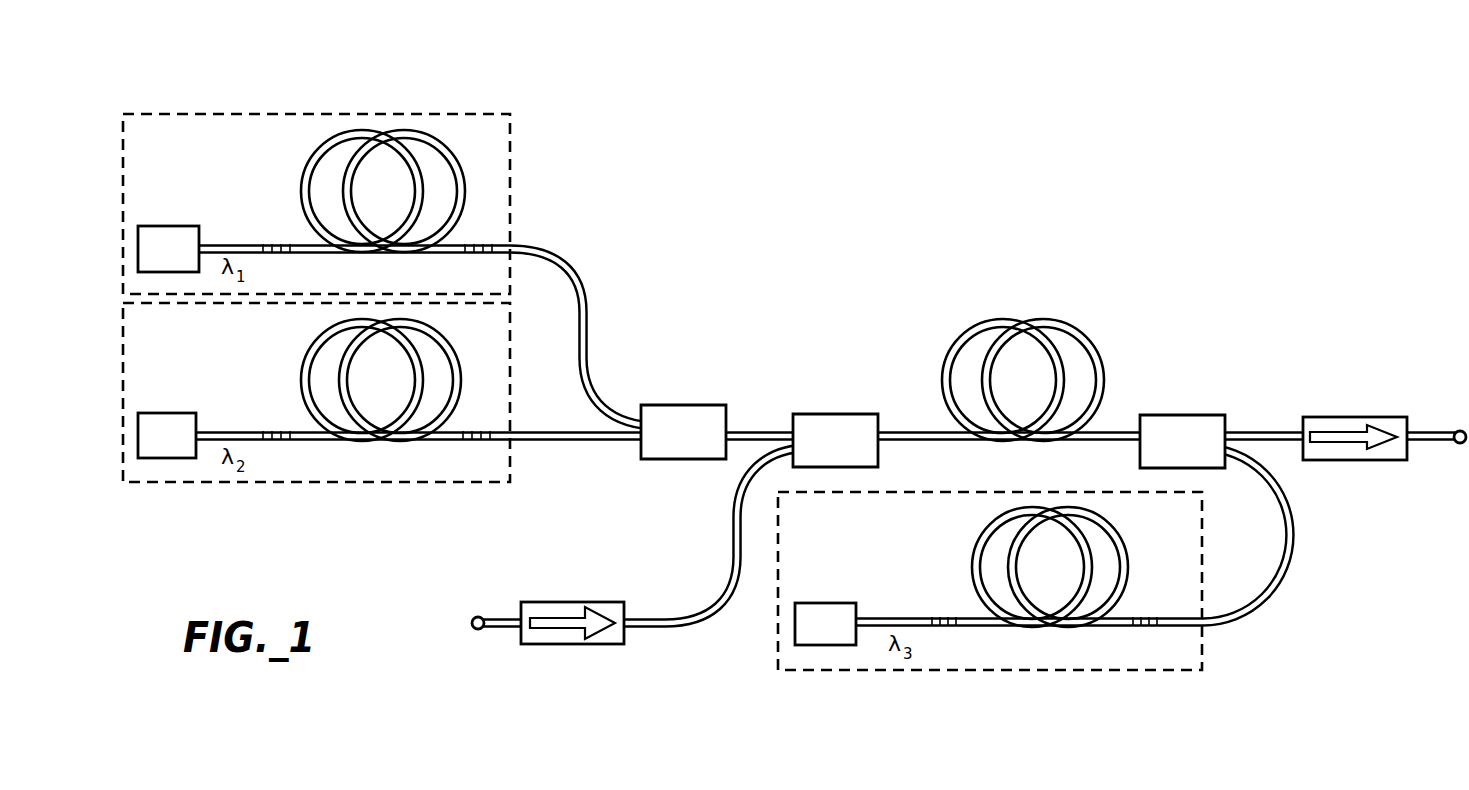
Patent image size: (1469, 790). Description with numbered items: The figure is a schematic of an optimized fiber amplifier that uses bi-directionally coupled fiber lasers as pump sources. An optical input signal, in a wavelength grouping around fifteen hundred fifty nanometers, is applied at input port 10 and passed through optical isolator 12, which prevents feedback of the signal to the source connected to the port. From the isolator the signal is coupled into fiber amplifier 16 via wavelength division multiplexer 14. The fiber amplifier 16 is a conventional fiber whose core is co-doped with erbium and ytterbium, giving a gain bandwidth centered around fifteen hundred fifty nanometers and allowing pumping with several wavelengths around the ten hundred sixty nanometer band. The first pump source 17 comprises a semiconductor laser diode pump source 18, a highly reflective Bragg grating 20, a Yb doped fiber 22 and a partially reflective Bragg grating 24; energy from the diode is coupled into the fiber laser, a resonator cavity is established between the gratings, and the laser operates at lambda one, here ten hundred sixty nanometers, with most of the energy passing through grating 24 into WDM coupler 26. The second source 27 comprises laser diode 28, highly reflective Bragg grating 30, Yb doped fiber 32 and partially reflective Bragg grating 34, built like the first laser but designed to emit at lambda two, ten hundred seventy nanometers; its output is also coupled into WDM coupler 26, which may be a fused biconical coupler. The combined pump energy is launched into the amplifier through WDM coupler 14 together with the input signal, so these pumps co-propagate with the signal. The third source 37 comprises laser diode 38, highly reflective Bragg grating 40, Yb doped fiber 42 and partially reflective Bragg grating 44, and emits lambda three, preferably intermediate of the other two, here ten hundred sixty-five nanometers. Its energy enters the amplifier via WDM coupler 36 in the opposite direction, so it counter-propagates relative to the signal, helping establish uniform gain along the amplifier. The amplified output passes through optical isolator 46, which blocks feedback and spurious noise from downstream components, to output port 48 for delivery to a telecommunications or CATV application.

The input port 10 is at (480, 617).
The optical isolator 12 is at (572, 602).
The wavelength division multiplexer 14 is at (845, 414).
The fiber amplifier 16 is at (1060, 322).
The pump source 17 is at (512, 176).
The semiconductor laser diode pump source 18 is at (158, 226).
The highly reflective Bragg grating 20 is at (280, 240).
The Yb doped fiber 22 is at (308, 160).
The partially reflective Bragg grating 24 is at (480, 256).
The WDM coupler 26 is at (690, 405).
The second source 27 is at (438, 484).
The laser diode 28 is at (158, 413).
The highly reflective Bragg grating 30 is at (280, 428).
The Yb doped fiber 32 is at (308, 350).
The partially reflective Bragg grating 34 is at (480, 443).
The WDM coupler 36 is at (1180, 415).
The third source 37 is at (1202, 648).
The laser diode 38 is at (840, 603).
The highly reflective Bragg grating 40 is at (950, 617).
The Yb doped fiber 42 is at (972, 548).
The partially reflective Bragg grating 44 is at (1145, 617).
The optical isolator 46 is at (1328, 417).
The output port 48 is at (1460, 431).